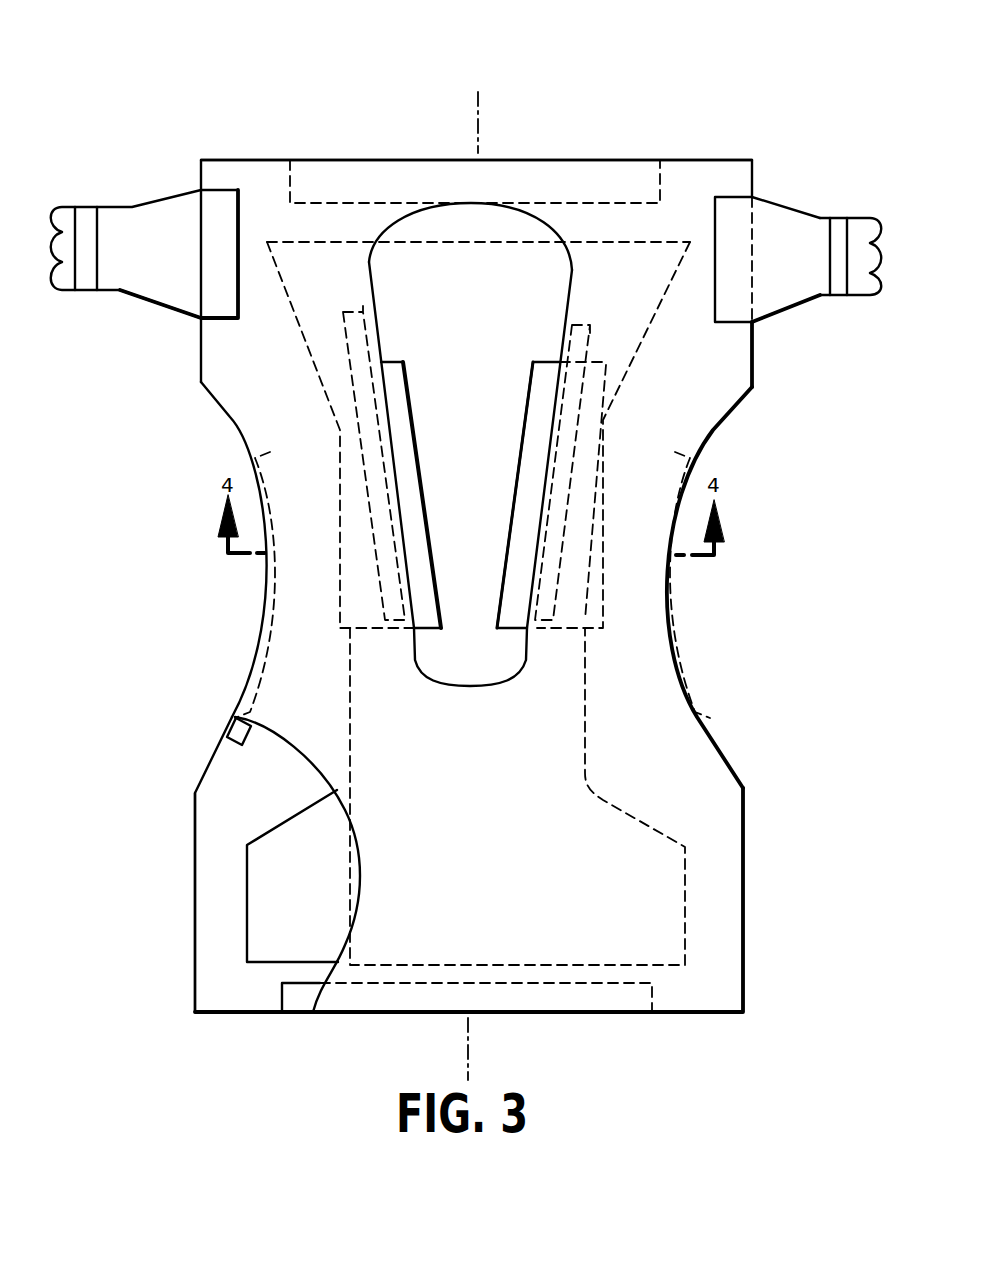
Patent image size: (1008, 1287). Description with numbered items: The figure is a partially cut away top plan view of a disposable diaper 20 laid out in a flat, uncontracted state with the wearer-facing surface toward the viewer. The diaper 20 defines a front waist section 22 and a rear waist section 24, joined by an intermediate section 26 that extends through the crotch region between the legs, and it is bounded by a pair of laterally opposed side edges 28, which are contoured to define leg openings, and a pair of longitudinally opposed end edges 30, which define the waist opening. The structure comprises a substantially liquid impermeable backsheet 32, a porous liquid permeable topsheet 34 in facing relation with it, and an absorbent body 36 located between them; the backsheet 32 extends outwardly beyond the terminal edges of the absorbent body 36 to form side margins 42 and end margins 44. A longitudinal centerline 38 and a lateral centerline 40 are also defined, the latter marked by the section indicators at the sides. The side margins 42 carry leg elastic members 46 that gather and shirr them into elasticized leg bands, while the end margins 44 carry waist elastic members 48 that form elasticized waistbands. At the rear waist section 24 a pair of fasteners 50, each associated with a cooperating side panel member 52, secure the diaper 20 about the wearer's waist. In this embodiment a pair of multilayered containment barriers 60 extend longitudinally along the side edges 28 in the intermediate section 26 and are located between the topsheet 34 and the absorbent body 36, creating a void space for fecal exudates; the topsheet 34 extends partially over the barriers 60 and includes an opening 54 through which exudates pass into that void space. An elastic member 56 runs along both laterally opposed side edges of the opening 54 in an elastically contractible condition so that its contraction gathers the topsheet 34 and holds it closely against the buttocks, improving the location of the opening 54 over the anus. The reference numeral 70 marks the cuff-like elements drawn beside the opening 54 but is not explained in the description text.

The disposable diaper 20 is at (193, 64).
The front waist section 22 is at (793, 938).
The rear waist section 24 is at (810, 377).
The intermediate section 26 is at (763, 630).
The side edges 28 is at (733, 772).
The end edges 30 is at (713, 162).
The backsheet 32 is at (203, 838).
The topsheet 34 is at (287, 743).
The absorbent body 36 is at (245, 913).
The longitudinal centerline 38 is at (480, 140).
The lateral centerline 40 is at (694, 565).
The side margins 42 is at (250, 413).
The end margins 44 is at (265, 178).
The leg elastic members 46 is at (227, 740).
The waist elastic members 48 is at (278, 997).
The fasteners 50 is at (837, 218).
The side panel member 52 is at (777, 200).
The opening 54 is at (572, 275).
The elastic member 56 is at (347, 312).
The multilayered containment barrier 60 is at (550, 362).
The barrier cuff 70 is at (417, 428).